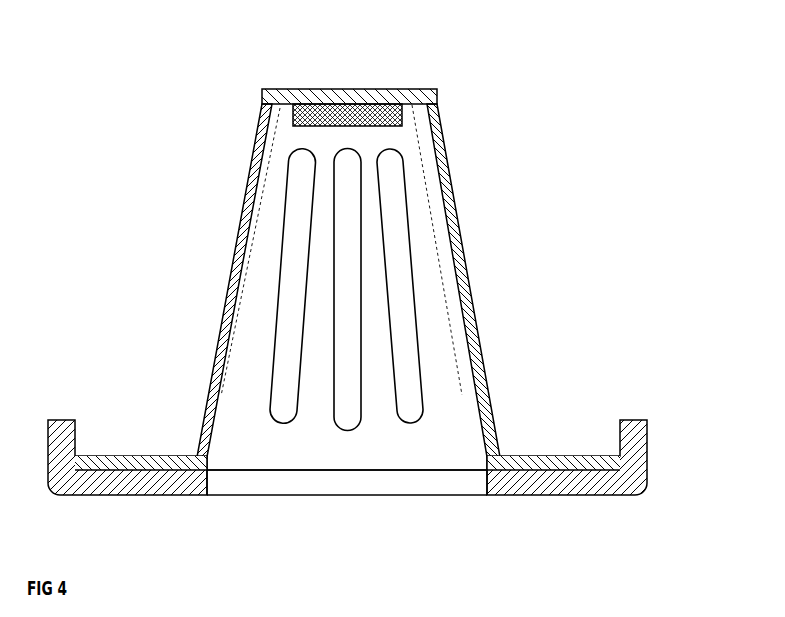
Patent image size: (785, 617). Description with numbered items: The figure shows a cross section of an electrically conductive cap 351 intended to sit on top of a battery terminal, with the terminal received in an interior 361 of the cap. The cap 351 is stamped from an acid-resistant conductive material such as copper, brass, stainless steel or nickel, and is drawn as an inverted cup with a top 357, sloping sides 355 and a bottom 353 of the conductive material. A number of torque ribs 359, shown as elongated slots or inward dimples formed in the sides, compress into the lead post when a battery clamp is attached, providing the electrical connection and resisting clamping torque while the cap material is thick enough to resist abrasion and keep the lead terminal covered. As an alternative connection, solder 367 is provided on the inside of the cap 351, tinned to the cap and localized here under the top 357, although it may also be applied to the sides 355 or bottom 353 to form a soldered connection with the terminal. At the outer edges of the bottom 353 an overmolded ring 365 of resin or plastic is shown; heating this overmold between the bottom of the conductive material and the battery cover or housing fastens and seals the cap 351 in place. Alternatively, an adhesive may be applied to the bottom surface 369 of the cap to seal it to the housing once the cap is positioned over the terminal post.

The electrically conductive cap 351 is at (572, 79).
The bottom 353 is at (487, 470).
The sides 355 is at (468, 282).
The top 357 is at (348, 89).
The torque ribs 359 is at (337, 166).
The interior 361 is at (284, 503).
The overmolded ring 365 is at (648, 475).
The solder 367 is at (404, 114).
The bottom surface 369 is at (548, 495).